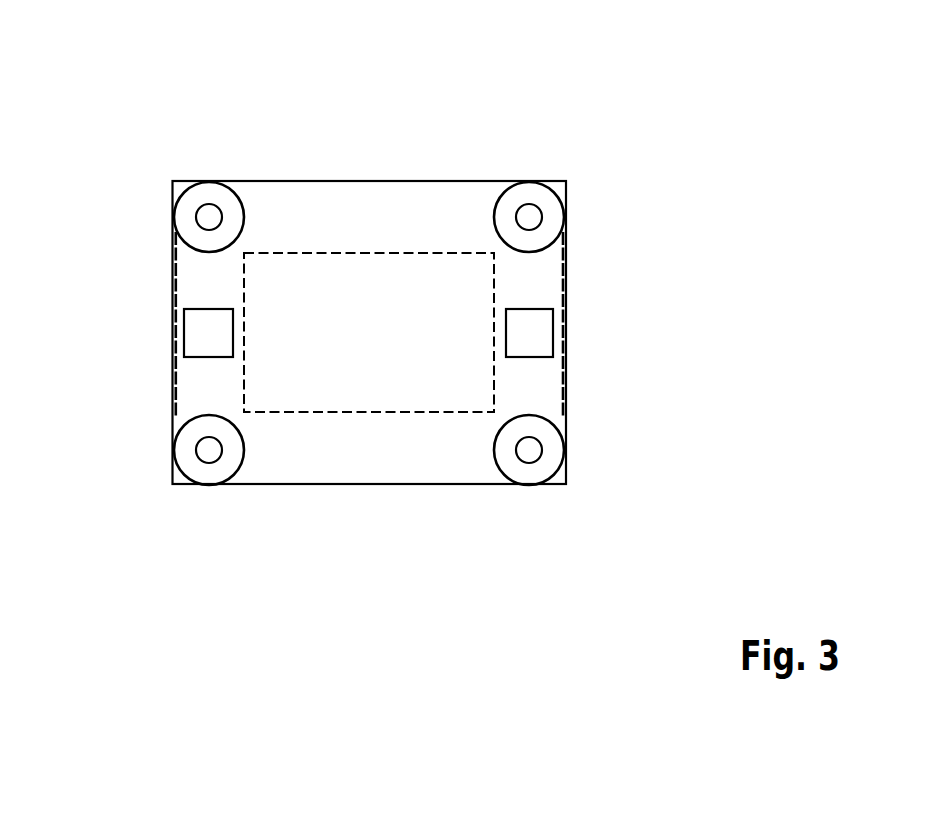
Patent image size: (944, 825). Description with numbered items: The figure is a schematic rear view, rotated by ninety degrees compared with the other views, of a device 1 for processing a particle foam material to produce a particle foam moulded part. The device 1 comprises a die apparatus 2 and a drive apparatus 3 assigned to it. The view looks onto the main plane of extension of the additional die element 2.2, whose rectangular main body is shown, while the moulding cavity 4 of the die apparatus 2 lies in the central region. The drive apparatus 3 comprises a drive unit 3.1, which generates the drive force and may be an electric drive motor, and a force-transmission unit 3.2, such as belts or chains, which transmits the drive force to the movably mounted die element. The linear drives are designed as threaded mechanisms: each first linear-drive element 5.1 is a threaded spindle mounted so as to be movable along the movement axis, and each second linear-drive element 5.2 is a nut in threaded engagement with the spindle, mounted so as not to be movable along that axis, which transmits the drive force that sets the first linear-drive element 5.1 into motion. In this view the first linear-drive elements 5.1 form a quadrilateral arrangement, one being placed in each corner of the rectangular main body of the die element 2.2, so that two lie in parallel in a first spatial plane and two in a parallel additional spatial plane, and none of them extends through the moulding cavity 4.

The device 1 is at (112, 133).
The die apparatus 2 is at (322, 506).
The additional die element 2.2 is at (414, 461).
The drive apparatus 3 is at (614, 400).
The drive unit 3.1 is at (540, 337).
The force-transmission unit 3.2 is at (565, 279).
The moulding cavity 4 is at (424, 250).
The first linear-drive element 5.1 is at (528, 212).
The second linear-drive element 5.2 is at (550, 217).